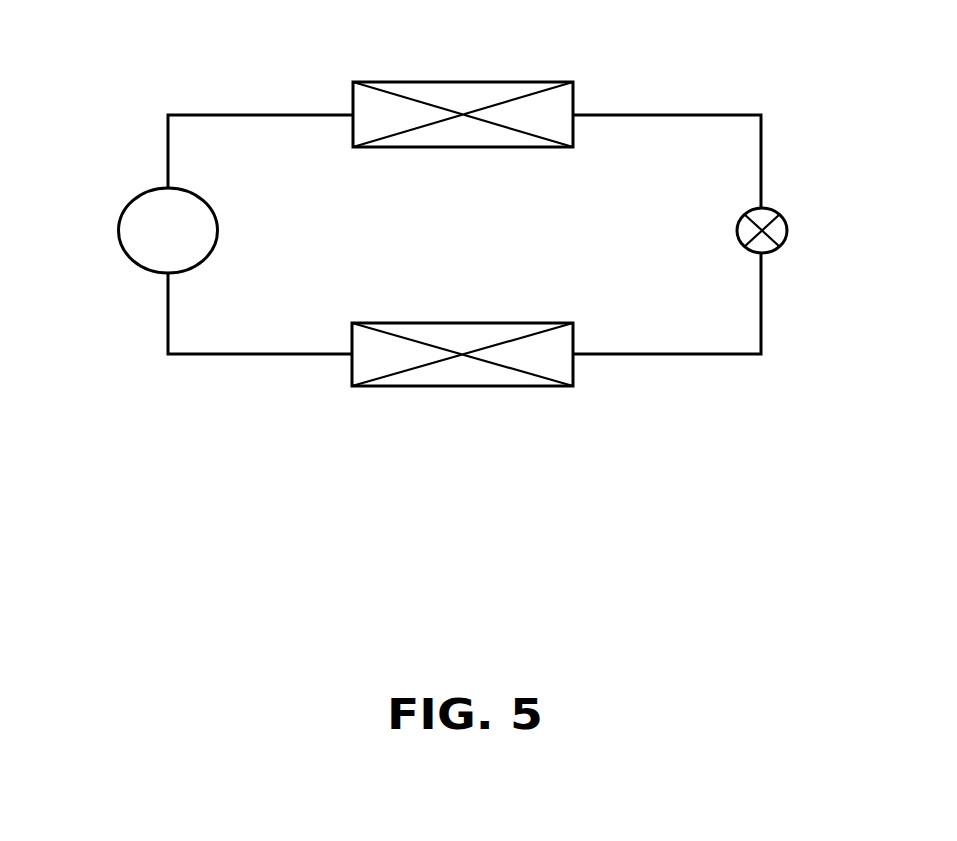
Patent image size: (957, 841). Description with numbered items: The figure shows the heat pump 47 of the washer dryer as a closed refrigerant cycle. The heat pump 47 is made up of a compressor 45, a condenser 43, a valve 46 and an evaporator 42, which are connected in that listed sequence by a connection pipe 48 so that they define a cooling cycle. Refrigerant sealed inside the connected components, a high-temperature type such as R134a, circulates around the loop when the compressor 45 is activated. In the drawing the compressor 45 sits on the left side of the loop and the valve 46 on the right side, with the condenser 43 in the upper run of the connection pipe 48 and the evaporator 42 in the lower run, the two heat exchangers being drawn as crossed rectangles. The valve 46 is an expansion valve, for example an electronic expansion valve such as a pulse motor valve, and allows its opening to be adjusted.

The evaporator 42 is at (455, 388).
The condenser 43 is at (456, 81).
The compressor 45 is at (118, 226).
The valve 46 is at (788, 228).
The heat pump 47 is at (504, 231).
The connection pipe 48 is at (248, 112).